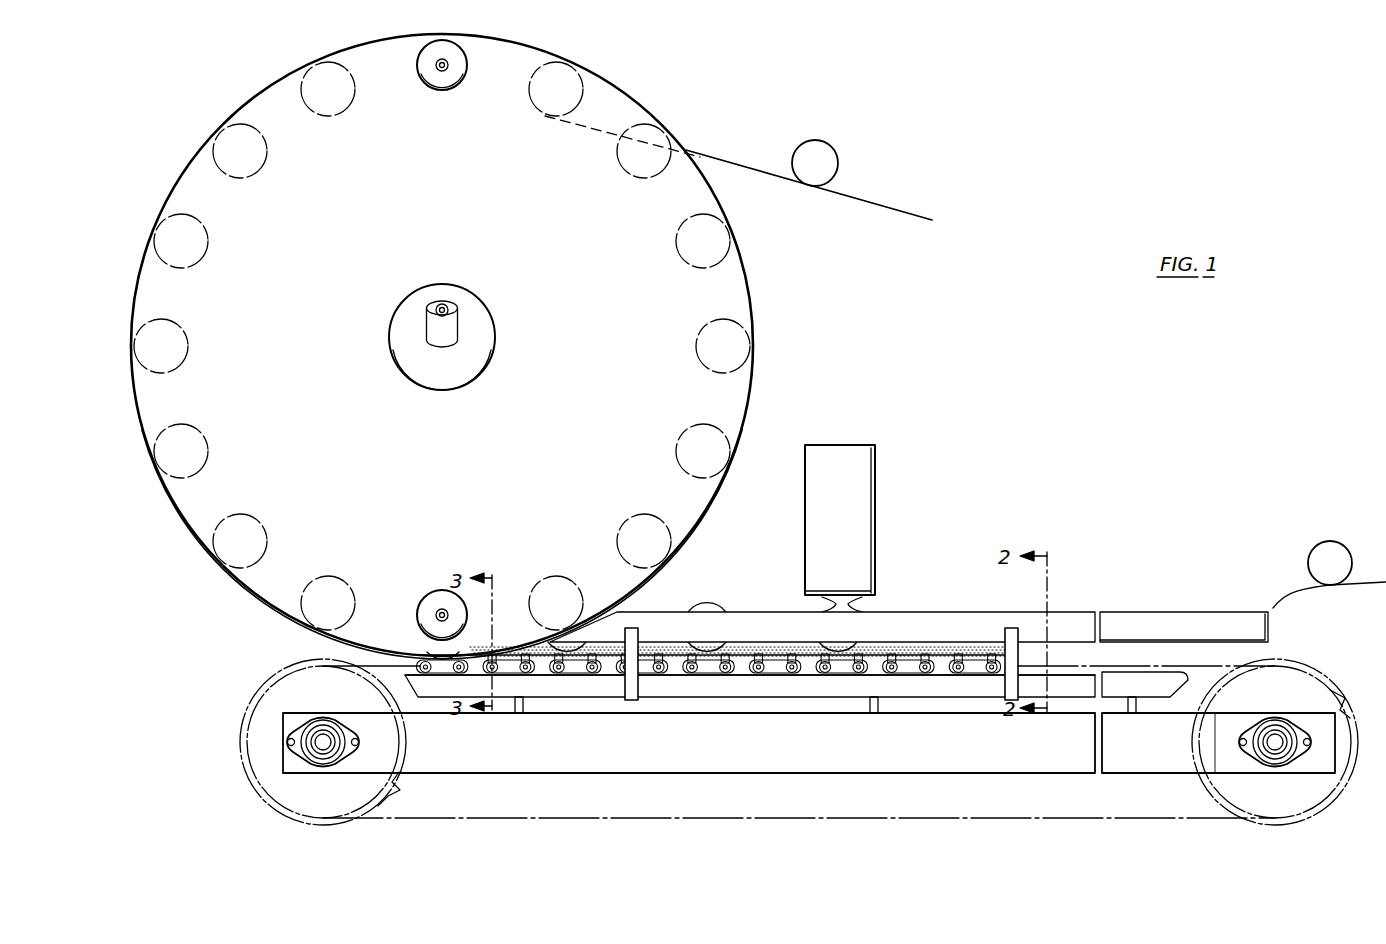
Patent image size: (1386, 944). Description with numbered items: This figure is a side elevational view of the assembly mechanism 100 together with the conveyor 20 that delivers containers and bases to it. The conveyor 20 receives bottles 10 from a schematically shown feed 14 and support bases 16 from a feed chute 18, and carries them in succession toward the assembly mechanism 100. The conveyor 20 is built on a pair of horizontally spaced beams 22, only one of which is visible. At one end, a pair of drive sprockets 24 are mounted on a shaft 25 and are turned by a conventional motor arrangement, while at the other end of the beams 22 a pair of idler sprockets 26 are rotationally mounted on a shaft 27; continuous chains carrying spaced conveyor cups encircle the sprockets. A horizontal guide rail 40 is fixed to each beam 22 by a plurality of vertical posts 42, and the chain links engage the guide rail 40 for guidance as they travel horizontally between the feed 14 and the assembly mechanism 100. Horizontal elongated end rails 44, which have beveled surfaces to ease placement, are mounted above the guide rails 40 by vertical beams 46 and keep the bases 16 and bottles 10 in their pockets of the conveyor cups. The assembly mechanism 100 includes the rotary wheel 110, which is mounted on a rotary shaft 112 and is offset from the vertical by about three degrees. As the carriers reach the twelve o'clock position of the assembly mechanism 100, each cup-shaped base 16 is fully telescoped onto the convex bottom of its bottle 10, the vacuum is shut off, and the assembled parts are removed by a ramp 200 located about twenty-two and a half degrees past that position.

The bottle 10 is at (1337, 551).
The feed 14 is at (1296, 593).
The support base 16 is at (826, 603).
The feed chute 18 is at (866, 489).
The conveyor 20 is at (1321, 819).
The horizontal beam 22 is at (972, 757).
The drive sprocket 24 is at (397, 790).
The shaft 25 is at (326, 743).
The idler sprocket 26 is at (1350, 695).
The shaft 27 is at (1273, 735).
The horizontal guide rail 40 is at (757, 687).
The vertical post 42 is at (527, 714).
The horizontal elongated end rail 44 is at (1170, 617).
The vertical beam 46 is at (638, 634).
The assembly mechanism 100 is at (768, 381).
The rotary wheel 110 is at (312, 444).
The rotary shaft 112 is at (433, 312).
The ramp 200 is at (566, 122).